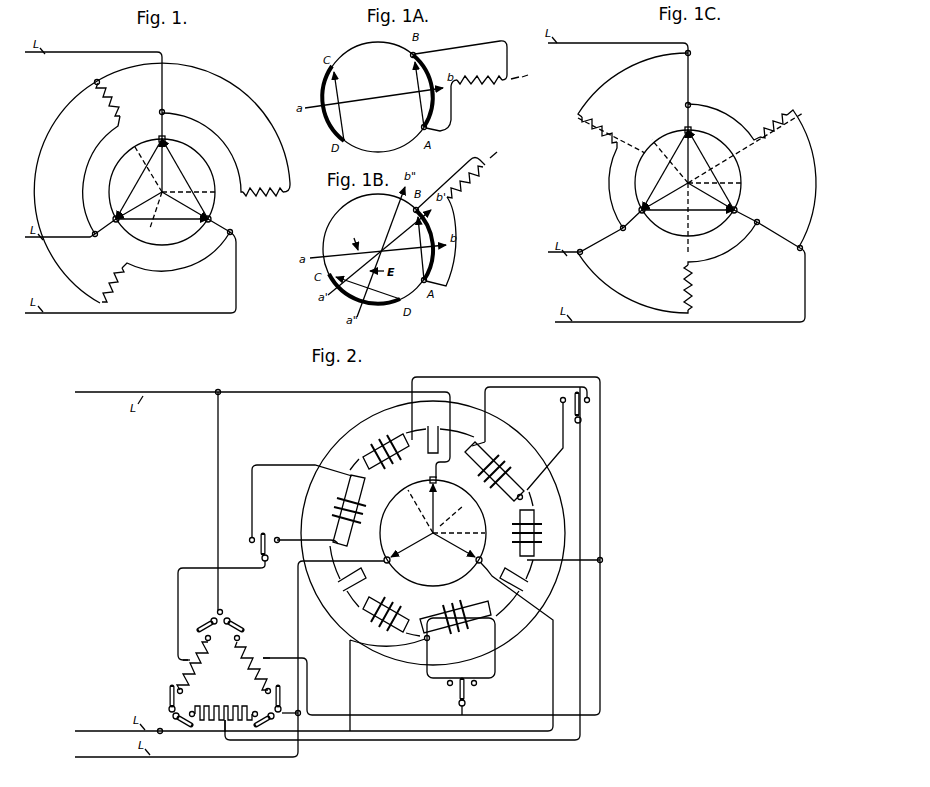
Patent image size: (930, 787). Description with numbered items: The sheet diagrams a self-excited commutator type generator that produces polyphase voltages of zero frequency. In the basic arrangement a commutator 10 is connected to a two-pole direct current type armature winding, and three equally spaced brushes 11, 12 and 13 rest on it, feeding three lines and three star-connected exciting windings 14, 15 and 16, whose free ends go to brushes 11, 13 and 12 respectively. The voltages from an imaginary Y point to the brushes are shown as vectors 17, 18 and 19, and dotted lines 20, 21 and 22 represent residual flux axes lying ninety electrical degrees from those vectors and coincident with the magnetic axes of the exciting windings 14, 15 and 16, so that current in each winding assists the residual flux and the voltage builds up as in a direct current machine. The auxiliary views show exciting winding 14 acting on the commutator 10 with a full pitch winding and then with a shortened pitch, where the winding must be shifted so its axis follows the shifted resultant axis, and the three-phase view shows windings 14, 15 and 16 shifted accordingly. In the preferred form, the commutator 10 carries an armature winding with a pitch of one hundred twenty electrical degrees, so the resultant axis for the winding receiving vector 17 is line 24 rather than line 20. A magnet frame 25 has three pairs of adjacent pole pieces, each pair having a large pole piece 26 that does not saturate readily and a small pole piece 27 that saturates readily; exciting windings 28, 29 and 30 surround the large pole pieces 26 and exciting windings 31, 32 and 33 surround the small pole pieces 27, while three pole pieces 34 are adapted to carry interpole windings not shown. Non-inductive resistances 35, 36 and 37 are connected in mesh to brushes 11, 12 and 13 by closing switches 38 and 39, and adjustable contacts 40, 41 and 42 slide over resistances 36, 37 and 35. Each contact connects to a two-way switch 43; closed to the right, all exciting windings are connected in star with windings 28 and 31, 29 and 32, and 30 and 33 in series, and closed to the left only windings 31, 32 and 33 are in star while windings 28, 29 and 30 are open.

In FIG. 1, the commutator 10 is at (213, 206).
In FIG. 1A, the commutator 10 is at (360, 48).
In FIG. 1B, the commutator 10 is at (340, 223).
In FIG. 1C, the commutator 10 is at (740, 147).
In FIG. 2, the commutator 10 is at (489, 532).
In FIG. 1, the brush 11 is at (158, 136).
In FIG. 1C, the brush 11 is at (685, 130).
In FIG. 2, the brush 11 is at (438, 480).
In FIG. 1, the brush 12 is at (211, 231).
In FIG. 1C, the brush 12 is at (738, 212).
In FIG. 2, the brush 12 is at (480, 566).
In FIG. 1, the brush 13 is at (112, 231).
In FIG. 1C, the brush 13 is at (641, 222).
In FIG. 2, the brush 13 is at (384, 558).
In FIG. 1, the exciting winding 14 is at (263, 202).
In FIG. 1A, the exciting winding 14 is at (479, 94).
In FIG. 1B, the exciting winding 14 is at (467, 186).
In FIG. 1C, the exciting winding 14 is at (777, 134).
In FIG. 1, the exciting winding 15 is at (120, 108).
In FIG. 1C, the exciting winding 15 is at (599, 140).
In FIG. 1, the exciting winding 16 is at (121, 283).
In FIG. 1C, the exciting winding 16 is at (700, 283).
In FIG. 1, the voltage vector 17 is at (171, 165).
In FIG. 1C, the voltage vector 17 is at (697, 156).
In FIG. 2, the voltage vector 17 is at (443, 508).
In FIG. 1, the voltage vector 18 is at (139, 200).
In FIG. 1C, the voltage vector 18 is at (665, 196).
In FIG. 2, the voltage vector 18 is at (412, 552).
In FIG. 1, the voltage vector 19 is at (185, 205).
In FIG. 1C, the voltage vector 19 is at (717, 201).
In FIG. 2, the voltage vector 19 is at (464, 554).
In FIG. 1, the residual flux axis 20 is at (207, 193).
In FIG. 1C, the residual flux axis 20 is at (747, 157).
In FIG. 2, the residual flux axis 20 is at (462, 527).
In FIG. 1, the residual flux axis 21 is at (145, 160).
In FIG. 1C, the residual flux axis 21 is at (670, 156).
In FIG. 2, the residual flux axis 21 is at (412, 514).
In FIG. 1, the residual flux axis 22 is at (143, 232).
In FIG. 1C, the residual flux axis 22 is at (665, 228).
In FIG. 2, the resultant magnetic axis line 24 is at (452, 512).
In FIG. 2, the magnet frame 25 is at (335, 444).
In FIG. 2, the large pole piece 26 is at (470, 608).
In FIG. 2, the small pole piece 27 is at (514, 536).
In FIG. 2, the exciting winding 28 is at (498, 468).
In FIG. 2, the exciting winding 29 is at (462, 632).
In FIG. 2, the exciting winding 30 is at (340, 514).
In FIG. 2, the exciting winding 31 is at (535, 531).
In FIG. 2, the exciting winding 32 is at (386, 620).
In FIG. 2, the exciting winding 33 is at (382, 448).
In FIG. 2, the interpole pole piece 34 is at (428, 454).
In FIG. 2, the resistance 35 is at (250, 669).
In FIG. 2, the resistance 36 is at (237, 710).
In FIG. 2, the resistance 37 is at (195, 677).
In FIG. 2, the switch 38 is at (236, 620).
In FIG. 2, the switch 39 is at (206, 623).
In FIG. 2, the adjustable contact 40 is at (224, 724).
In FIG. 2, the adjustable contact 41 is at (186, 662).
In FIG. 2, the adjustable contact 42 is at (258, 660).
In FIG. 2, the two-way switch 43 is at (581, 420).